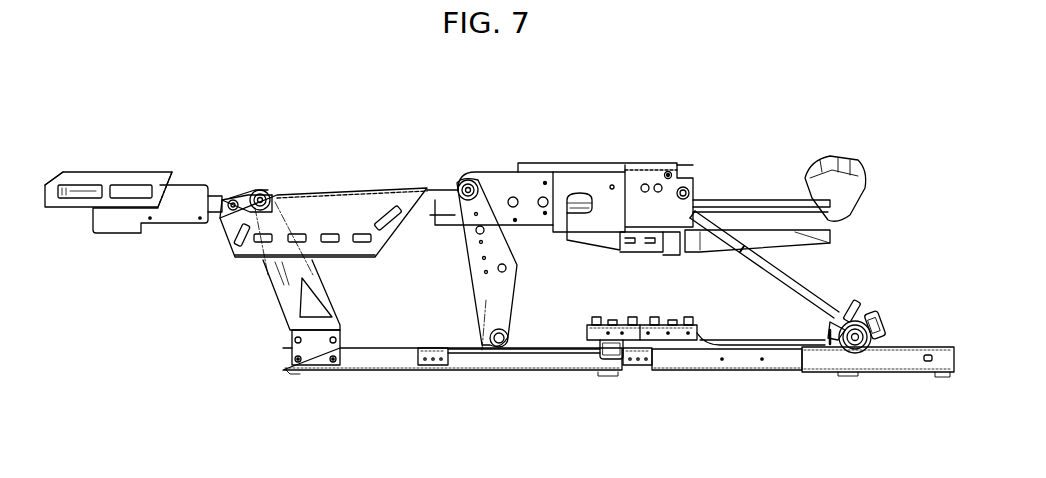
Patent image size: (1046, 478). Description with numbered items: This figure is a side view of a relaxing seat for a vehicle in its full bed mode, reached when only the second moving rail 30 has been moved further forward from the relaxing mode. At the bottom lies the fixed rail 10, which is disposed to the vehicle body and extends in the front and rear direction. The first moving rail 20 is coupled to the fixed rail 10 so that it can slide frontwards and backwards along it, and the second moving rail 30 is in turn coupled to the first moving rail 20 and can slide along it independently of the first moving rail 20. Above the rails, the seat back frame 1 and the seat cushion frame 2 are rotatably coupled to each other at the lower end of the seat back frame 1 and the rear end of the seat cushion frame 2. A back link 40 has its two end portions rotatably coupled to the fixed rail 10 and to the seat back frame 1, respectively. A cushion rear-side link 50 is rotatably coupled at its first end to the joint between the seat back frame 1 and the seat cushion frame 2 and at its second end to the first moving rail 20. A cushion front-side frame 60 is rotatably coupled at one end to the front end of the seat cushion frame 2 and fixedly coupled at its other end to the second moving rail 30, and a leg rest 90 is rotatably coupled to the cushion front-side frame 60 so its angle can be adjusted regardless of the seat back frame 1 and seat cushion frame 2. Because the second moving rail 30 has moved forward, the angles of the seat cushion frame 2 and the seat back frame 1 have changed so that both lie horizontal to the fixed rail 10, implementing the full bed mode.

The seat back frame 1 is at (648, 178).
The seat cushion frame 2 is at (437, 190).
The fixed rail 10 is at (847, 358).
The first moving rail 20 is at (697, 348).
The second moving rail 30 is at (380, 362).
The back link 40 is at (807, 294).
The cushion rear-side link 50 is at (495, 300).
The cushion front-side frame 60 is at (290, 298).
The leg rest 90 is at (128, 182).